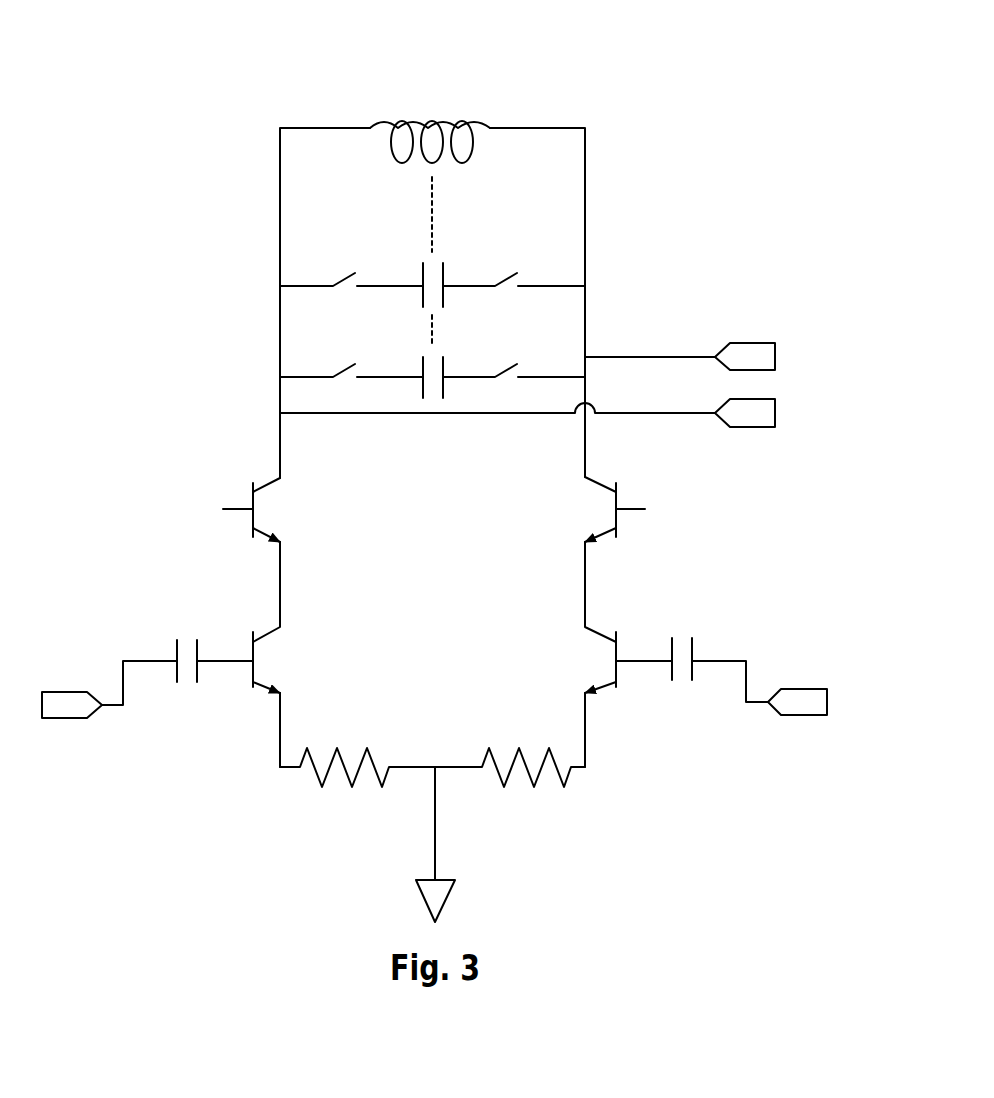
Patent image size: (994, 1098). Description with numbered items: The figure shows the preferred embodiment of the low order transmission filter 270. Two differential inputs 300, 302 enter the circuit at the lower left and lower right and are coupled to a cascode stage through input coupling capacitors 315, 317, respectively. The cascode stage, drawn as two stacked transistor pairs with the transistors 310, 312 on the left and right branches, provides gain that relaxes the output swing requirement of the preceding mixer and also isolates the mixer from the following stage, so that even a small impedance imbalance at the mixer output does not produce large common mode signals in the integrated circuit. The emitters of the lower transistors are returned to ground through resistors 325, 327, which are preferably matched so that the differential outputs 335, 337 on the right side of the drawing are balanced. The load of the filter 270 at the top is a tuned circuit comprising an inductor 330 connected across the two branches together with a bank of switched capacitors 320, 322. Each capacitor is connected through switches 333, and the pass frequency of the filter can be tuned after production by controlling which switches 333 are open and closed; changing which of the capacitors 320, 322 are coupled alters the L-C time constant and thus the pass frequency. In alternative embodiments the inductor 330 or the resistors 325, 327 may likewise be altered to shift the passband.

The TX filter 270 is at (188, 68).
The inductor 330 is at (492, 110).
The switched capacitor 322 is at (447, 275).
The switched capacitor 320 is at (462, 380).
The switches 333 is at (342, 292).
The differential output 337 is at (753, 330).
The differential output 335 is at (755, 440).
The transistor 310 is at (230, 533).
The transistor 312 is at (640, 532).
The input coupling capacitor 315 is at (195, 700).
The input coupling capacitor 317 is at (683, 688).
The differential input 300 is at (70, 730).
The differential input 302 is at (790, 730).
The resistor 325 is at (382, 748).
The resistor 327 is at (555, 790).